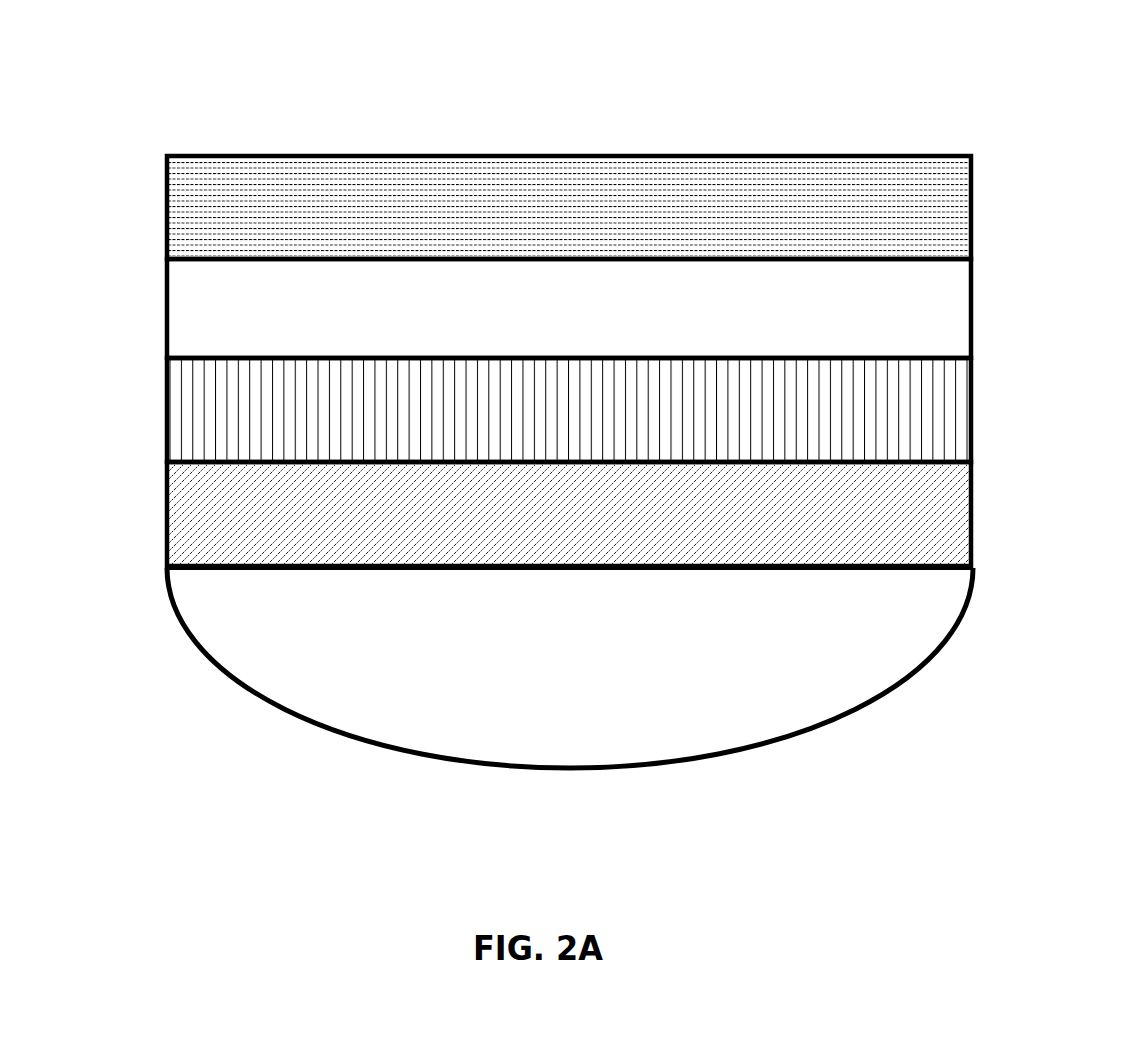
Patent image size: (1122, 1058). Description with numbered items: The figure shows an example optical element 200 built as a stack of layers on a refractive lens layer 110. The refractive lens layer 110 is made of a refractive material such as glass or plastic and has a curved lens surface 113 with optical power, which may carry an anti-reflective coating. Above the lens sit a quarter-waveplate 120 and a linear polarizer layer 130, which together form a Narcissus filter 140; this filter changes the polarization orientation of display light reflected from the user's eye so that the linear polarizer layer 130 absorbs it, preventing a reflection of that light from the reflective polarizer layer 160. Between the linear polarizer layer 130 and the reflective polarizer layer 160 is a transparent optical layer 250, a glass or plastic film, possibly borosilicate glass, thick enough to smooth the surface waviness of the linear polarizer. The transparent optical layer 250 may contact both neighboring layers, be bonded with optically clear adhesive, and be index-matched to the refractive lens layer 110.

The optical element 200 is at (1078, 64).
The reflective polarizer layer 160 is at (150, 259).
The transparent optical layer 250 is at (150, 259).
The linear polarizer layer 130 is at (150, 464).
The quarter-waveplate 120 is at (515, 514).
The Narcissus filter 140 is at (565, 462).
The refractive lens layer 110 is at (570, 675).
The lens surface 113 is at (836, 718).